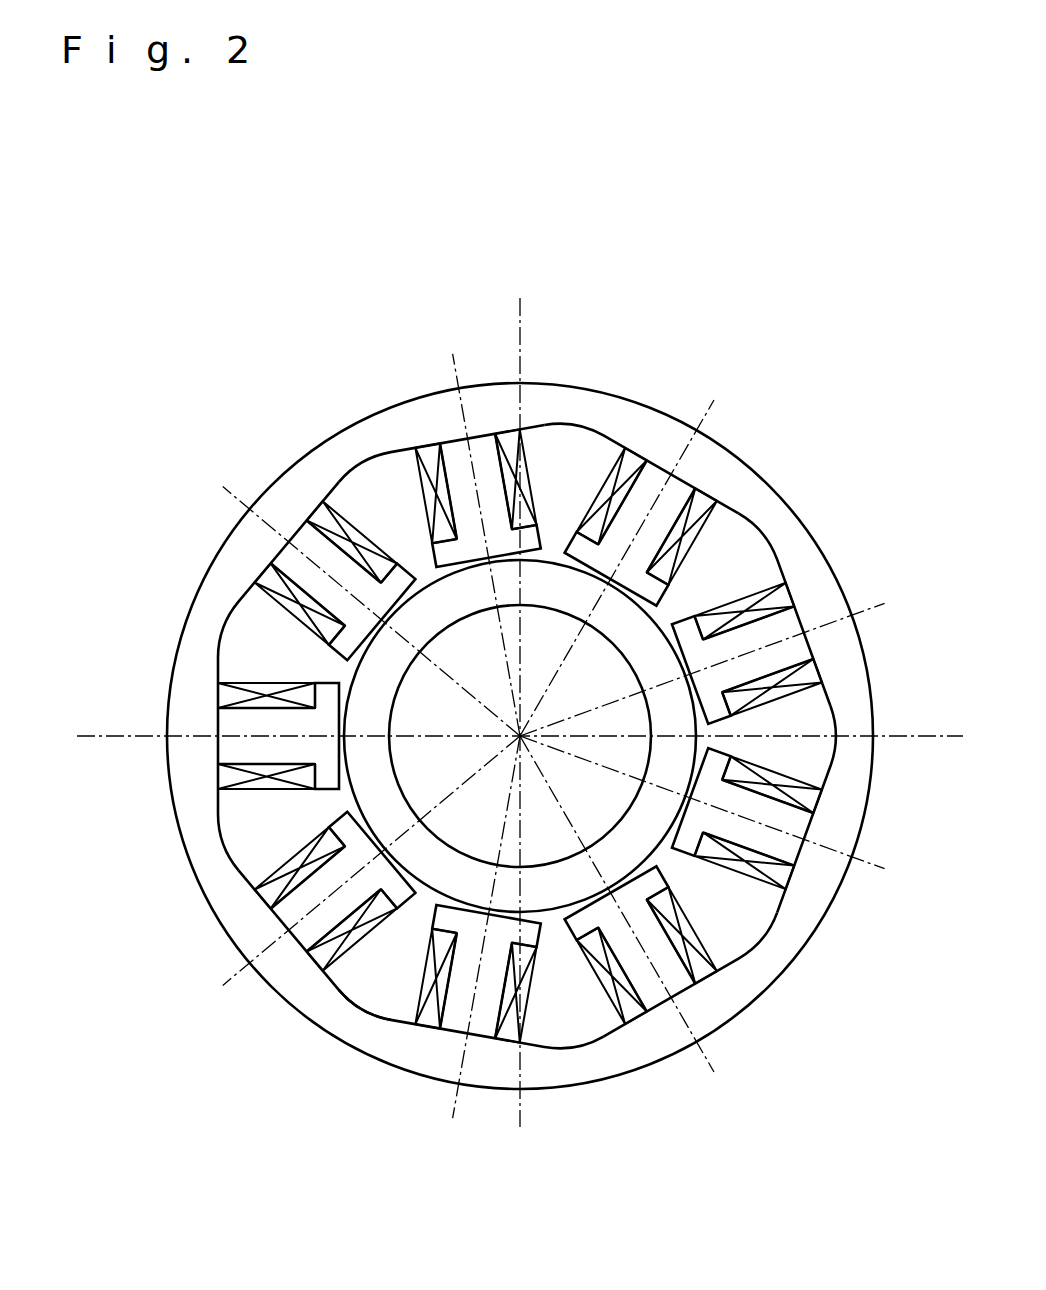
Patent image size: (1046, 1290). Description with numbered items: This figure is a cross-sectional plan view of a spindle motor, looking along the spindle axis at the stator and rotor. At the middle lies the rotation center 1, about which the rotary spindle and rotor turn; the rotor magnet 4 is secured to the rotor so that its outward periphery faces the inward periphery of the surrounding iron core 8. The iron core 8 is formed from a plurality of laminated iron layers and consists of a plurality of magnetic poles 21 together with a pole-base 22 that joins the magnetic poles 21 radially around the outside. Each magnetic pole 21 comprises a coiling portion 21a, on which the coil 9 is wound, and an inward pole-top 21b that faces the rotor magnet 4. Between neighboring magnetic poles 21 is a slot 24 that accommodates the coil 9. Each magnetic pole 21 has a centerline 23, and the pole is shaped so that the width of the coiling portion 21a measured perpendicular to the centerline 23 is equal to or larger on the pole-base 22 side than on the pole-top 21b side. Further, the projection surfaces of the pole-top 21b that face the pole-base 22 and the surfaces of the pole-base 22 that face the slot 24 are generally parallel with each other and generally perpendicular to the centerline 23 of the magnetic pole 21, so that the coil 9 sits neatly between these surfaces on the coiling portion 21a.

The rotation center 1 is at (545, 728).
The rotor magnet 4 is at (568, 595).
The iron core 8 is at (466, 646).
The coil 9 is at (262, 786).
The magnetic pole 21 is at (436, 620).
The coiling portion 21a is at (262, 707).
The pole-top 21b is at (327, 705).
The pole-base 22 is at (360, 455).
The centerline 23 is at (456, 368).
The slot 24 is at (392, 922).